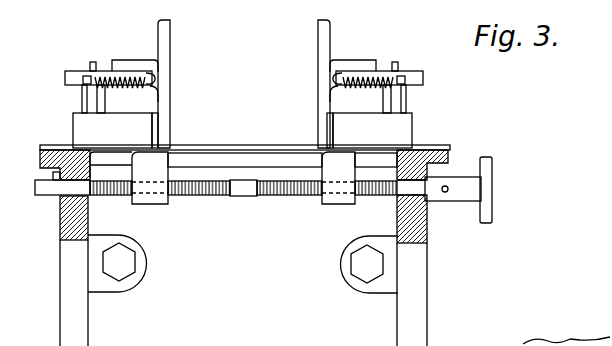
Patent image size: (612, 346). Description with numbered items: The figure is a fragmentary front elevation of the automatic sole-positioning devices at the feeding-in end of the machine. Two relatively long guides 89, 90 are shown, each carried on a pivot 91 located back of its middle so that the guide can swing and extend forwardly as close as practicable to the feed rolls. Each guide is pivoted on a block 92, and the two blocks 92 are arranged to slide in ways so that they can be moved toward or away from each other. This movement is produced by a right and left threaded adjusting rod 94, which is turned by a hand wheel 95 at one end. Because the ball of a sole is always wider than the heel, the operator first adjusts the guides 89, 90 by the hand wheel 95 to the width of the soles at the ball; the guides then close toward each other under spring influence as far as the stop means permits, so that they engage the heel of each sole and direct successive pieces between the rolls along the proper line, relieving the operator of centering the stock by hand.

The guide 89 is at (168, 80).
The guide 90 is at (322, 66).
The pivot 91 is at (151, 78).
The block 92 is at (242, 130).
The right and left threaded adjusting rod 94 is at (283, 196).
The hand wheel 95 is at (492, 188).